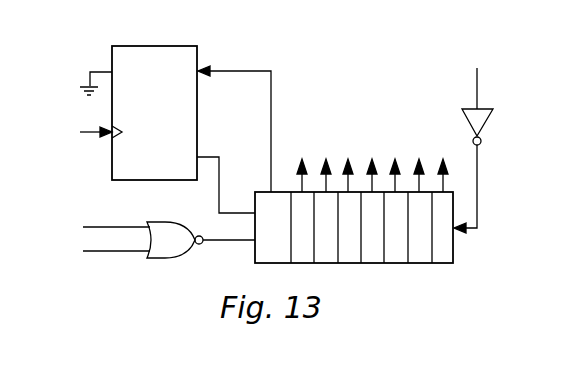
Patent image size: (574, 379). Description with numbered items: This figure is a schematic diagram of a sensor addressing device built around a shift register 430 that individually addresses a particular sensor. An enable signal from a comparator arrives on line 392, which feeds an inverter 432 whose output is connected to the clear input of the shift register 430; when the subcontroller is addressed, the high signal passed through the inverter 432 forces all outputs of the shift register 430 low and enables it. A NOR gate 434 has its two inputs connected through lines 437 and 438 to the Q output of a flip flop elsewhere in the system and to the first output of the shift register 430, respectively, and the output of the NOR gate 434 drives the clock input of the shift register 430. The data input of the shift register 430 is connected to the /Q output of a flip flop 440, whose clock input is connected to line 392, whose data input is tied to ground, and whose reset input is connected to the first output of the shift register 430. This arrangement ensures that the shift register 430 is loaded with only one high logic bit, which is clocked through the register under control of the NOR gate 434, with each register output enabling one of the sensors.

The flip flop 440 is at (201, 52).
The line 392 is at (88, 127).
The inverter 432 is at (463, 122).
The shift register 430 is at (420, 263).
The NOR gate 434 is at (180, 222).
The line 437 is at (103, 225).
The line 438 is at (124, 257).